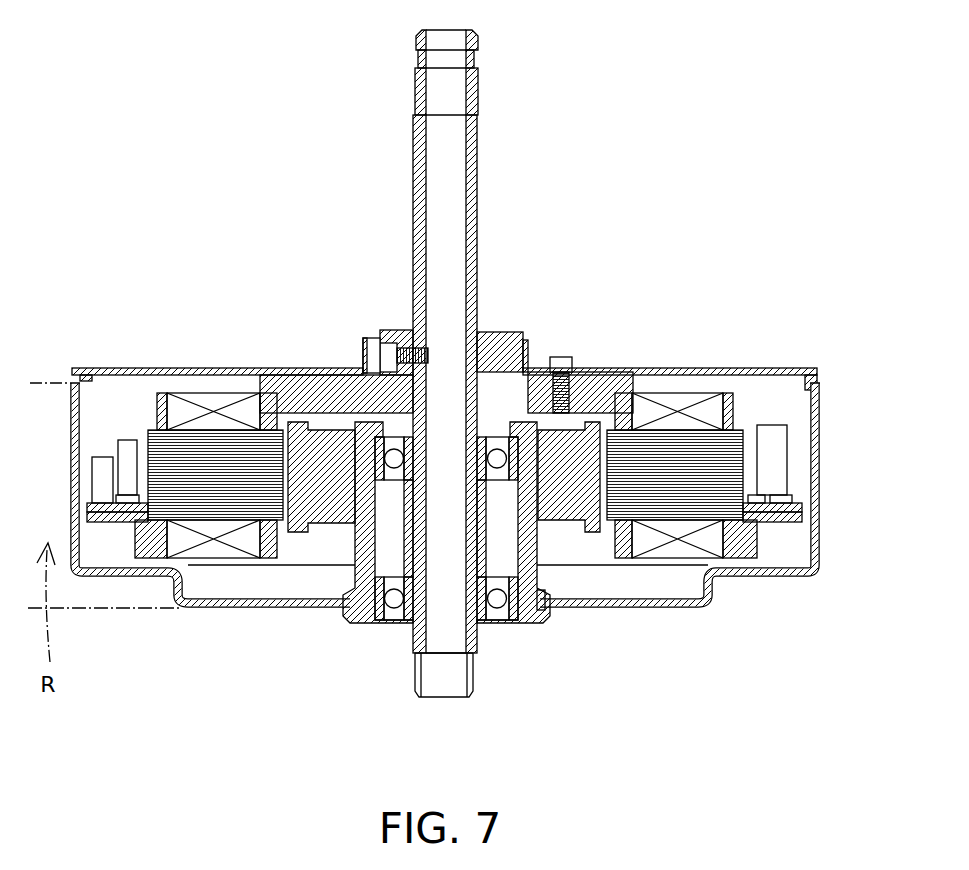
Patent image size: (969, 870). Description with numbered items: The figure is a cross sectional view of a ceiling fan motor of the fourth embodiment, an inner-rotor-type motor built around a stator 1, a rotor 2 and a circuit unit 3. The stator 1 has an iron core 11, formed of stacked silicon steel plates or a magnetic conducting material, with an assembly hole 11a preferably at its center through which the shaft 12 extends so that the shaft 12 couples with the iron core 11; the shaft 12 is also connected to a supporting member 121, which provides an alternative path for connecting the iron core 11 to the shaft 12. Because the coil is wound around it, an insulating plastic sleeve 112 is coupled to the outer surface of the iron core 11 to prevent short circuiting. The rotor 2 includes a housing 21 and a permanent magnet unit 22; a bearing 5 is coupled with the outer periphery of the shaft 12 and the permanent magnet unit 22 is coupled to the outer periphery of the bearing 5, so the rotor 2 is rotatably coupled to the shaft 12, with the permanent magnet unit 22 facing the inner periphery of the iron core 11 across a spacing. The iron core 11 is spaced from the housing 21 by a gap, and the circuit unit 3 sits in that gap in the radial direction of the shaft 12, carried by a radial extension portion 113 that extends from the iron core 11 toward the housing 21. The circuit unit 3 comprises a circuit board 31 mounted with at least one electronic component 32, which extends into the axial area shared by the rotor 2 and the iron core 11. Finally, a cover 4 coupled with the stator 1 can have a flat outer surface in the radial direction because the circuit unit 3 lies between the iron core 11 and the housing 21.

The stator 1 is at (388, 320).
The iron core 11 is at (446, 469).
The assembly hole 11a is at (295, 428).
The sleeve 112 is at (162, 393).
The radial extension portion 113 is at (108, 522).
The shaft 12 is at (480, 152).
The supporting member 121 is at (497, 345).
The rotor 2 is at (445, 569).
The housing 21 is at (714, 572).
The permanent magnet unit 22 is at (570, 522).
The circuit unit 3 is at (428, 455).
The circuit board 31 is at (97, 455).
The electronic component 32 is at (122, 440).
The cover 4 is at (680, 370).
The bearing 5 is at (507, 625).